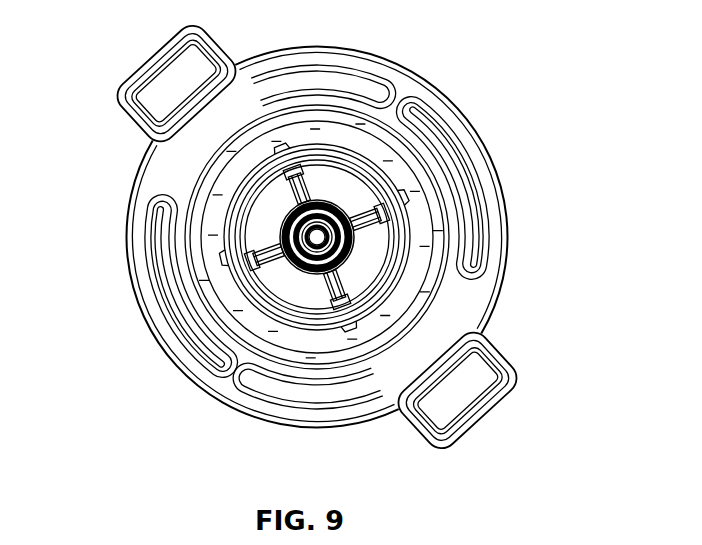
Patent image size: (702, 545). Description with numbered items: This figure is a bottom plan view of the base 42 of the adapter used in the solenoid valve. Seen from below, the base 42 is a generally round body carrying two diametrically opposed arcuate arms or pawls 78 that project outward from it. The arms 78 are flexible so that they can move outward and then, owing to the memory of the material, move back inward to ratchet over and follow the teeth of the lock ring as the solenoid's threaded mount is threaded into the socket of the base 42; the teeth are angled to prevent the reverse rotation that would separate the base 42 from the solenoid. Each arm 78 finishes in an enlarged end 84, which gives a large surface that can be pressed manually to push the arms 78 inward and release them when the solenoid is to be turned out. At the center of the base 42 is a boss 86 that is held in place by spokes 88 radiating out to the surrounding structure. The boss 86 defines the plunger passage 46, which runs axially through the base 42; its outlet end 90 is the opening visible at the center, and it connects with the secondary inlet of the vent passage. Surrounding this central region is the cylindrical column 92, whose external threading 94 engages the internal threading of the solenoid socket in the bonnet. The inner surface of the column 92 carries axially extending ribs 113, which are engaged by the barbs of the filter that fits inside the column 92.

The base 42 is at (489, 26).
The plunger passage 46 is at (383, 253).
The arcuate arms 78 is at (405, 72).
The enlarged end 84 is at (126, 74).
The boss 86 is at (237, 213).
The spokes 88 is at (397, 210).
The outlet end 90 is at (327, 196).
The cylindrical column 92 is at (275, 300).
The external threading 94 is at (245, 268).
The axially extending ribs 113 is at (285, 152).